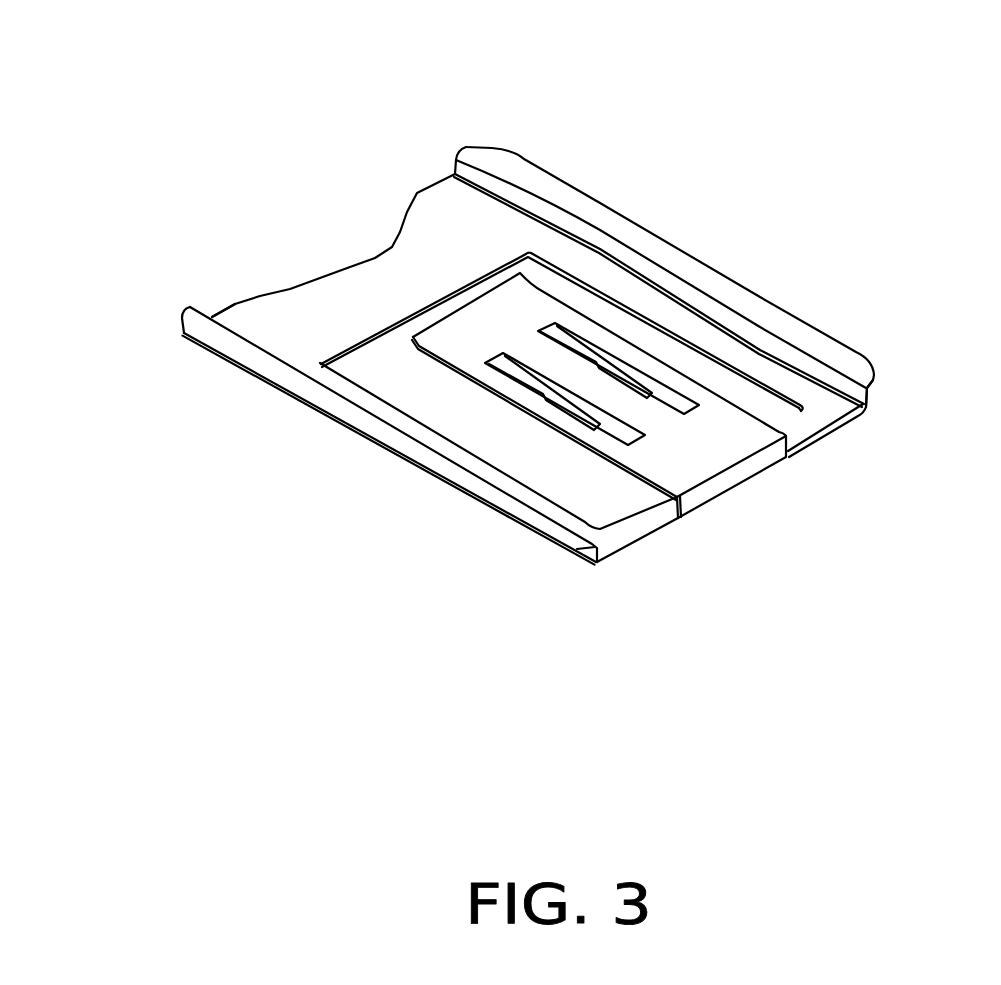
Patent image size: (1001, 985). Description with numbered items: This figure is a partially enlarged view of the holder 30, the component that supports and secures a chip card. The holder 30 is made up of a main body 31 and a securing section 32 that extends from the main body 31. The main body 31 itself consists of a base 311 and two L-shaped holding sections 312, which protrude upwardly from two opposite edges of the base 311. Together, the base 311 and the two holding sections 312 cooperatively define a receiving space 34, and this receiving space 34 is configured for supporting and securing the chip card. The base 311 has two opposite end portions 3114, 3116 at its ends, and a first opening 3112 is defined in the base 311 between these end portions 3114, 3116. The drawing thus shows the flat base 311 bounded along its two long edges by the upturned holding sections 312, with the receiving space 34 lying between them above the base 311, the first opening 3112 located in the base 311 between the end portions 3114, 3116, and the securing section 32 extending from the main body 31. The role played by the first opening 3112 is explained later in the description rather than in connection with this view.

The holder 30 is at (180, 147).
The main body 31 is at (514, 62).
The base 311 is at (447, 243).
The L-shaped holding sections 312 is at (253, 360).
The first opening 3112 is at (600, 312).
The end portion 3114 is at (815, 423).
The end portion 3116 is at (256, 352).
The securing section 32 is at (720, 432).
The receiving space 34 is at (323, 340).